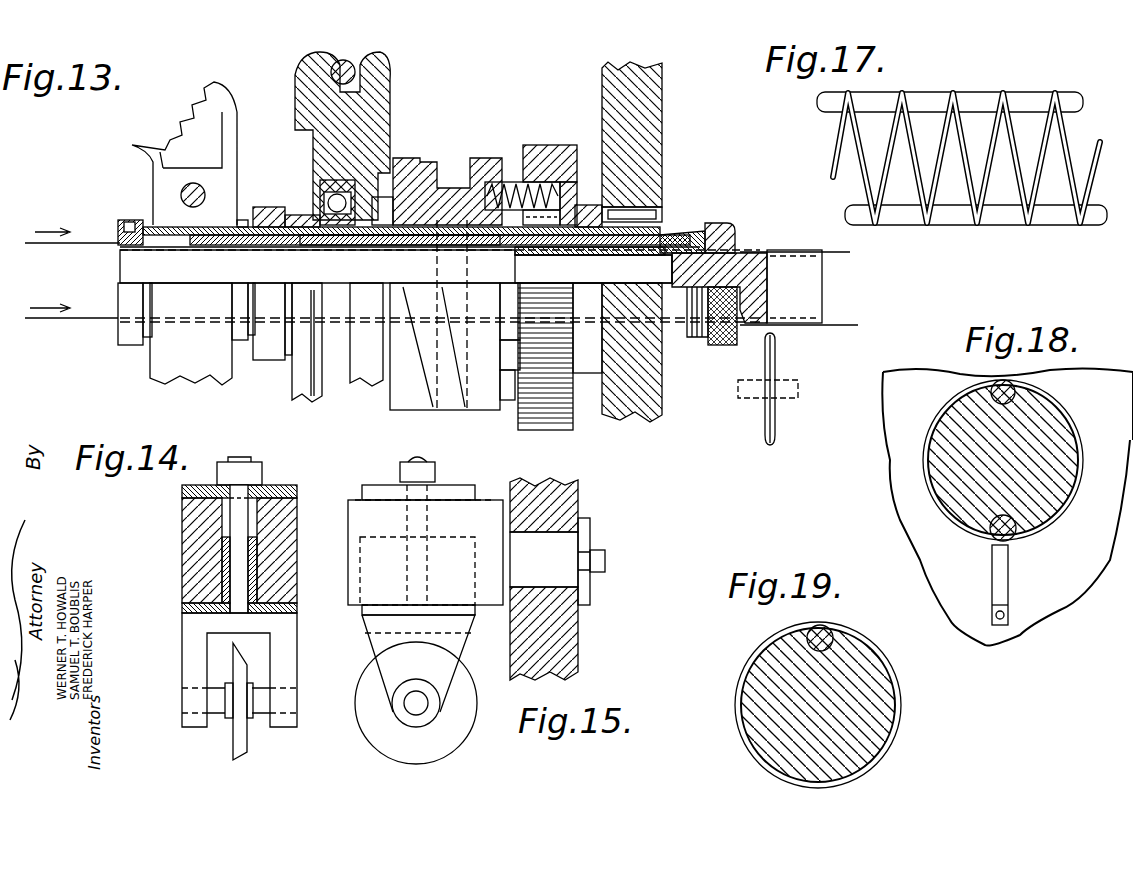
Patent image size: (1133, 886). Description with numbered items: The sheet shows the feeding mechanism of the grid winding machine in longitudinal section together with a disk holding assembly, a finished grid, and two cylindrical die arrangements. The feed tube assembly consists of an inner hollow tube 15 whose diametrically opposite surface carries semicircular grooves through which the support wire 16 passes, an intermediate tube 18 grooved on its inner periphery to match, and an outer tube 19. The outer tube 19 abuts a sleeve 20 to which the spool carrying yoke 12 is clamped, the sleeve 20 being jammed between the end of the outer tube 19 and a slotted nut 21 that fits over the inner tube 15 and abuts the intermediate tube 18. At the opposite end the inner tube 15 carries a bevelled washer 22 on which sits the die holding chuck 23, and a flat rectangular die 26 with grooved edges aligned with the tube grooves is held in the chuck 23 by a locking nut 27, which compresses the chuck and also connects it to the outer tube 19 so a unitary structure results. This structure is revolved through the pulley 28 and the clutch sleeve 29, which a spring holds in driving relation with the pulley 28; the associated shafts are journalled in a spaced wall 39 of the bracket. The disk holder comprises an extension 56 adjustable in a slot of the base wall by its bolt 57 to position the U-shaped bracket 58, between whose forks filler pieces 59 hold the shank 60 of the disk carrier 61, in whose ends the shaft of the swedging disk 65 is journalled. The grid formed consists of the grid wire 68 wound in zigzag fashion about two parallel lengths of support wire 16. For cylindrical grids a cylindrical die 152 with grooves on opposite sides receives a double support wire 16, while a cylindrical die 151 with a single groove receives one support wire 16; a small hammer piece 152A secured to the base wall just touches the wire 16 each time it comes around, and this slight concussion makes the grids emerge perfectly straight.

In FIG. 13, the spool carrying frame or yoke 12 is at (228, 103).
In FIG. 13, the nut 21 is at (118, 224).
In FIG. 13, the sleeve 20 is at (242, 220).
In FIG. 13, the pulley 28 is at (382, 98).
In FIG. 13, the clutch sleeve 29 is at (440, 172).
In FIG. 13, the spaced wall 39 is at (550, 145).
In FIG. 13, the outer tube 19 is at (400, 238).
In FIG. 13, the inner hollow tube 15 is at (488, 273).
In FIG. 13, the intermediate tube 18 is at (568, 250).
In FIG. 13, the bevelled washer 22 is at (655, 249).
In FIG. 13, the locking nut 27 is at (712, 224).
In FIG. 13, the die holding chuck 23 is at (740, 251).
In FIG. 13, the flat substantially rectangular die 26 is at (794, 286).
In FIG. 13, the swedging disk 65 is at (776, 356).
In FIG. 14, the shank 60 is at (238, 518).
In FIG. 14, the bracket 58 is at (198, 557).
In FIG. 15, the bracket 58 is at (425, 545).
In FIG. 14, the filler pieces 59 is at (186, 604).
In FIG. 14, the disk carrier 61 is at (186, 651).
In FIG. 15, the disk carrier 61 is at (380, 647).
In FIG. 15, the extension 56 is at (551, 543).
In FIG. 15, the bolt 57 is at (582, 562).
In FIG. 17, the support wire 16 is at (928, 98).
In FIG. 18, the support wire 16 is at (992, 392).
In FIG. 19, the support wire 16 is at (832, 637).
In FIG. 17, the grid wire 68 is at (968, 195).
In FIG. 18, the cylindrical shaped die 152 is at (1055, 436).
In FIG. 18, the hammer piece 152A is at (1005, 575).
In FIG. 19, the cylindrical die 151 is at (860, 676).